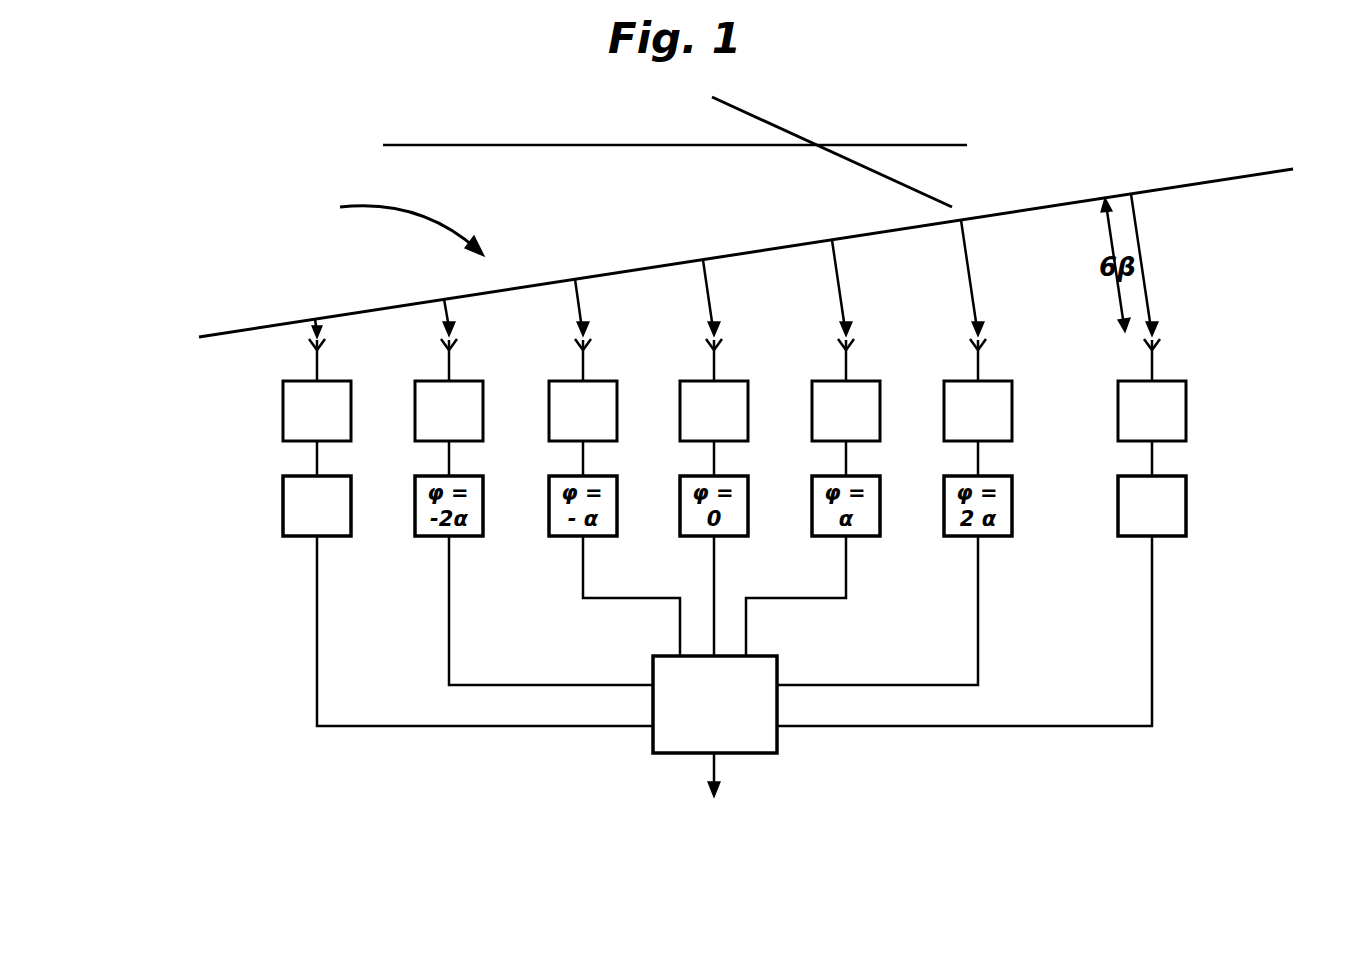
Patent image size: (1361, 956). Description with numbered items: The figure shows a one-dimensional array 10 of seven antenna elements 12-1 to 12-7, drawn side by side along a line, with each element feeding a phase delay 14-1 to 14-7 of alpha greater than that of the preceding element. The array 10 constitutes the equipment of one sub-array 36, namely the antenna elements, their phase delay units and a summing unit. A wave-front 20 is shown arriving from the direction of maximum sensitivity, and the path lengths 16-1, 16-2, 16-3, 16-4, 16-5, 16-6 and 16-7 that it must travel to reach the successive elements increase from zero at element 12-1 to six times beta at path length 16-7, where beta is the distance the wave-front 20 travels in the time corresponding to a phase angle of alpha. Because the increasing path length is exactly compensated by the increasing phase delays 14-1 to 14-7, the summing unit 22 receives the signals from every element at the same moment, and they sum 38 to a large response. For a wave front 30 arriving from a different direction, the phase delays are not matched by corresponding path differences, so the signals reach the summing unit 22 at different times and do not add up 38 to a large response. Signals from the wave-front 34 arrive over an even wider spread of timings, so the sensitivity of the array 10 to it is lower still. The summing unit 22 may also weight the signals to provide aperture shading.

The one-dimensional array 10 is at (748, 340).
The antenna element 12-1 is at (312, 350).
The antenna element 12-7 is at (1146, 344).
The phase delay 14-1 is at (283, 506).
The phase delay 14-7 is at (1186, 506).
The path length 16-1 is at (322, 322).
The path length 16-2 is at (454, 322).
The path length 16-3 is at (588, 312).
The path length 16-4 is at (708, 290).
The path length 16-5 is at (842, 297).
The path length 16-6 is at (972, 266).
The path length 16-7 is at (1140, 256).
The wave-front 20 is at (645, 268).
The summing unit 22 is at (777, 660).
The wave front 30 is at (903, 145).
The wave-front 34 is at (956, 198).
The sub-array 36 is at (393, 227).
The output signal 38 is at (718, 770).